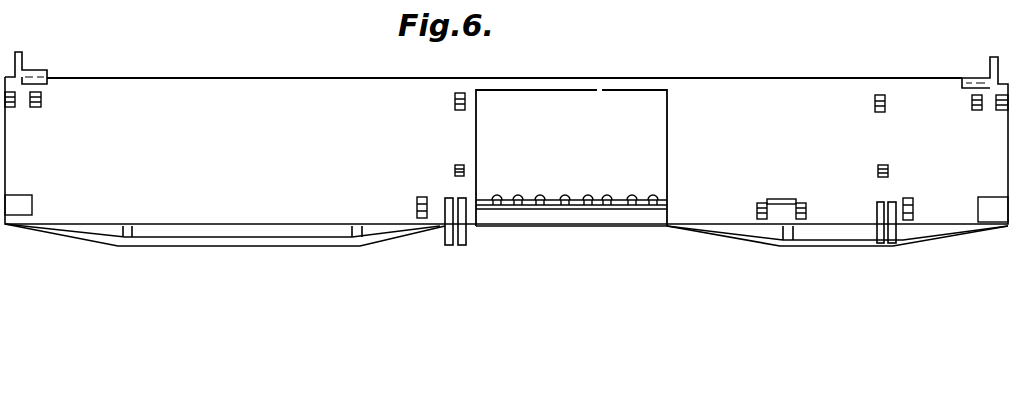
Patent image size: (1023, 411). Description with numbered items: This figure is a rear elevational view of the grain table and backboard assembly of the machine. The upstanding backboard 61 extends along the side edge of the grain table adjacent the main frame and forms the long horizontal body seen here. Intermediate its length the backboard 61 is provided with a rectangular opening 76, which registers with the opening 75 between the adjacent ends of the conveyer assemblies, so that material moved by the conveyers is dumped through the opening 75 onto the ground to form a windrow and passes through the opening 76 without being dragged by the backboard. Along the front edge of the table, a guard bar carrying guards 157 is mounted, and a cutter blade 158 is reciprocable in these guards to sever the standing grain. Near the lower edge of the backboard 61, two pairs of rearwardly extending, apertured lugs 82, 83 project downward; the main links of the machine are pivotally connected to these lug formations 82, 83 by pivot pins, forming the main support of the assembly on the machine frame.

The backboard 61 is at (780, 88).
The rectangular opening 76 is at (590, 100).
The opening 75 is at (580, 228).
The guards 157 is at (530, 199).
The cutter blade 158 is at (602, 198).
The apertured lugs 82 is at (466, 246).
The apertured lugs 83 is at (878, 244).